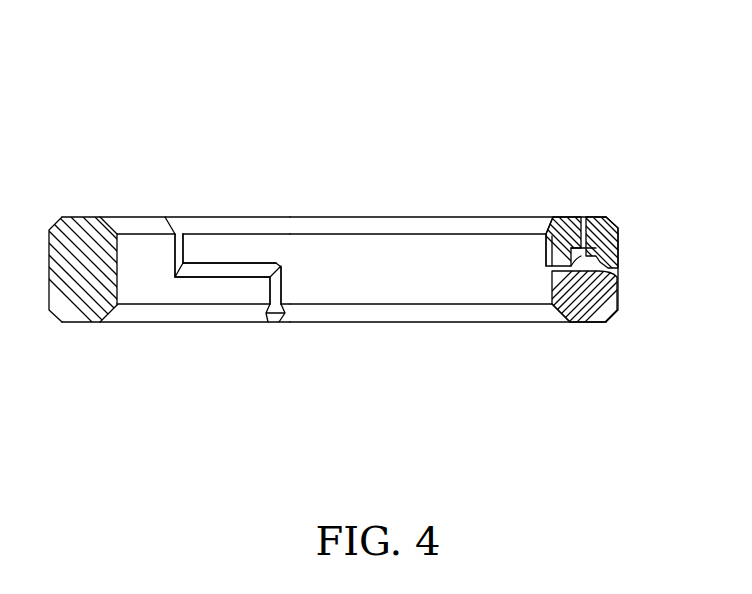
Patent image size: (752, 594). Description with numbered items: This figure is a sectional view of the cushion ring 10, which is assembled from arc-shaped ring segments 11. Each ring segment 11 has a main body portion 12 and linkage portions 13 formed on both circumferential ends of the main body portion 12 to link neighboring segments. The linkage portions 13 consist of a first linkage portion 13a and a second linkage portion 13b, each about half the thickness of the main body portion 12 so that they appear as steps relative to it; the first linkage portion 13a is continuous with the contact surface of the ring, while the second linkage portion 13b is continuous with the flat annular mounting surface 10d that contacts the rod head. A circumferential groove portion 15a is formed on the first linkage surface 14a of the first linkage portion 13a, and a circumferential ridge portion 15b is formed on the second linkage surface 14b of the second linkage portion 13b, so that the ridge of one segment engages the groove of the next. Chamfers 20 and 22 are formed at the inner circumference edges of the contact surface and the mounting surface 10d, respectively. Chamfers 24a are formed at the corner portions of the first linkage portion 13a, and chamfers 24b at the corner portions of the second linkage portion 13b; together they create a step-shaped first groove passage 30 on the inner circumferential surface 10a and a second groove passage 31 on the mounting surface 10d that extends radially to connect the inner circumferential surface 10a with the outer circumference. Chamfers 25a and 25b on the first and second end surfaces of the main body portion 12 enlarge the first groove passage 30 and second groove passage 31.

The cushion ring 10 is at (424, 89).
The inner circumferential surface 10a is at (505, 272).
The mounting surface 10d is at (366, 324).
The ring segment 11 is at (114, 209).
The main body portion 12 is at (133, 290).
The linkage portion 13 is at (170, 330).
The first linkage portion 13a is at (271, 247).
The second linkage portion 13b is at (250, 298).
The first linkage surface 14a is at (612, 300).
The second linkage surface 14b is at (553, 240).
The groove portion 15a is at (582, 240).
The ridge portion 15b is at (613, 260).
The chamfer 20 is at (400, 226).
The chamfer 22 is at (447, 312).
The chamfer 24a is at (222, 262).
The chamfer 24b is at (268, 284).
The chamfer 25a is at (279, 304).
The chamfer 25b is at (183, 246).
The first groove passage 30 is at (252, 250).
The second groove passage 31 is at (267, 329).